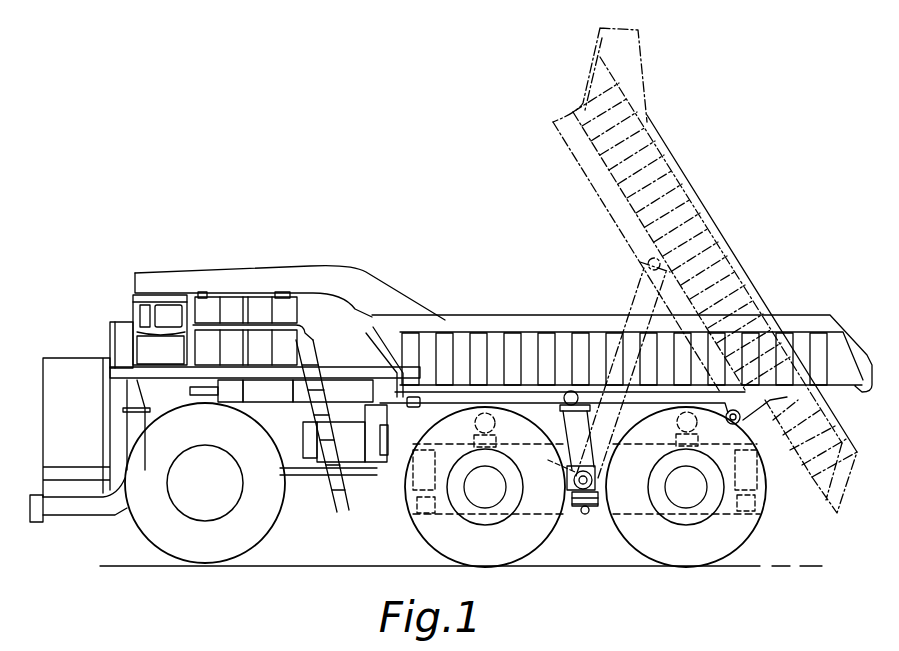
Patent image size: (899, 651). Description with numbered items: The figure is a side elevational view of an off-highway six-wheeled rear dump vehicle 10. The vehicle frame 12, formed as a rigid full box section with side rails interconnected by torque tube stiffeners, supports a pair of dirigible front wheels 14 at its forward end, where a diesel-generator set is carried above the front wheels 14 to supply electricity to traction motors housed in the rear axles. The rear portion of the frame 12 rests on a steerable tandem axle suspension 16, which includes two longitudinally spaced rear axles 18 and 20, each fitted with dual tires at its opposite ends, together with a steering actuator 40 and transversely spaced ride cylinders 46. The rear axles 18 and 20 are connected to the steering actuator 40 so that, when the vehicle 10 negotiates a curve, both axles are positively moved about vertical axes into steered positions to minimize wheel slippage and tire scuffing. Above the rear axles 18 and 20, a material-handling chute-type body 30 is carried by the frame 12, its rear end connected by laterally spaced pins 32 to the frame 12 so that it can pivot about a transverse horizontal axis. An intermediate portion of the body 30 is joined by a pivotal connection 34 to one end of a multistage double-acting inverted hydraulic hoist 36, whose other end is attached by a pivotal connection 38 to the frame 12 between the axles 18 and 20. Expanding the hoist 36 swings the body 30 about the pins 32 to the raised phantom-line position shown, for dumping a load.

The rear dump vehicle 10 is at (347, 248).
The vehicle frame 12 is at (394, 446).
The front wheels 14 is at (156, 538).
The steerable tandem axle suspension 16 is at (591, 543).
The rear axle 18 is at (443, 524).
The rear axle 20 is at (723, 529).
The material-handling chute-type body 30 is at (622, 235).
The pins 32 is at (745, 423).
The pivotal connection 34 is at (580, 392).
The multistage double-acting inverted hydraulic hoist 36 is at (573, 430).
The pivotal connection 38 is at (593, 478).
The steering actuator 40 is at (578, 526).
The ride cylinders 46 is at (402, 492).